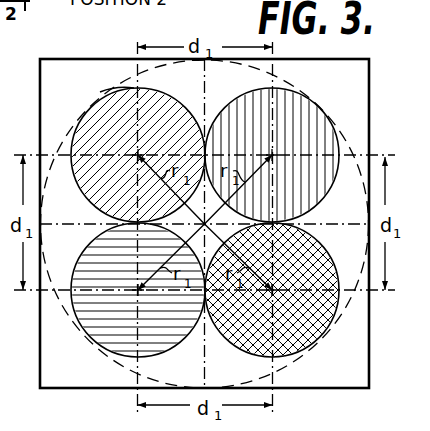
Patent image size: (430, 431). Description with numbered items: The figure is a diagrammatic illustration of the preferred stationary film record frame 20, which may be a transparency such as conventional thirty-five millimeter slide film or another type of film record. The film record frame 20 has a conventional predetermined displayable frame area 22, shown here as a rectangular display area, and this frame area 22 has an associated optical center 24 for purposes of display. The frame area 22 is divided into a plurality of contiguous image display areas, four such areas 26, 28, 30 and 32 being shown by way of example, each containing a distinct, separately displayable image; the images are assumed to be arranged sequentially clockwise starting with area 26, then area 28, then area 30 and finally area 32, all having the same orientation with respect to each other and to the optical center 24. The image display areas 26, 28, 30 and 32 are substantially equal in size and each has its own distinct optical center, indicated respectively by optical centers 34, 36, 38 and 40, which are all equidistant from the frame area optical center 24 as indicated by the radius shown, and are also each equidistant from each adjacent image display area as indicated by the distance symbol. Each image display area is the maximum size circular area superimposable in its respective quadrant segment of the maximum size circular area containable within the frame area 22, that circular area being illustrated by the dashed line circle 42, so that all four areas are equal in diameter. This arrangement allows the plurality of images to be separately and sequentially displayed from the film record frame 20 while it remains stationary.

The film record frame 20 is at (375, 366).
The displayable frame area 22 is at (348, 82).
The optical center 24 is at (205, 222).
The image display area 26 is at (158, 96).
The image display area 28 is at (316, 114).
The image display area 30 is at (328, 236).
The image display area 32 is at (90, 337).
The optical center 34 is at (139, 155).
The optical center 36 is at (273, 156).
The optical center 38 is at (273, 290).
The optical center 40 is at (137, 289).
The dashed line circle 42 is at (117, 80).